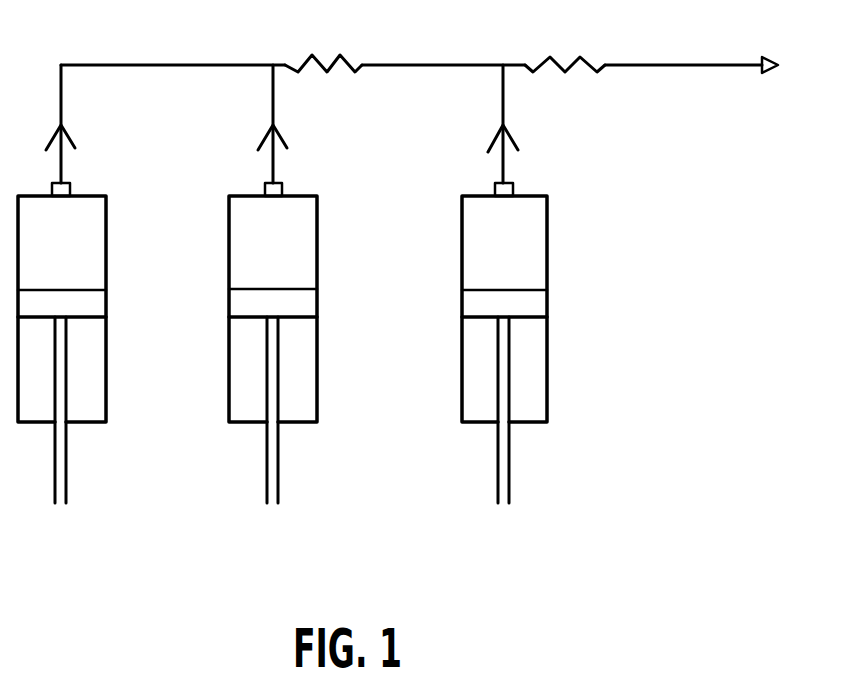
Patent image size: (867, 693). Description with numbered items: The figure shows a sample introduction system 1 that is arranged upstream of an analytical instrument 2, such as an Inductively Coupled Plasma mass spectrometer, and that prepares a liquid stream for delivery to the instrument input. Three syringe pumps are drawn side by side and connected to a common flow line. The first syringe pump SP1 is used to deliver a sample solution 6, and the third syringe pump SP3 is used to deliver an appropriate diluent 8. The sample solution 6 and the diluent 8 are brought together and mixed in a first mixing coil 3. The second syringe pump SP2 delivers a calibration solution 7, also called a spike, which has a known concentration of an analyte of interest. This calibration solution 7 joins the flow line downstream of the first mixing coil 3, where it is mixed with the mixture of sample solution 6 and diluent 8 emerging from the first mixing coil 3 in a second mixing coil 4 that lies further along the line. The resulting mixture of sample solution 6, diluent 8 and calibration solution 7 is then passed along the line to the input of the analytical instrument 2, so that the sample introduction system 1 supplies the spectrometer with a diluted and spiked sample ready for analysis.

The sample introduction system 1 is at (622, 351).
The analytical instrument 2 is at (440, 61).
The first mixing coil 3 is at (343, 55).
The second mixing coil 4 is at (582, 58).
The sample solution 6 is at (62, 103).
The calibration solution 7 is at (504, 105).
The diluent 8 is at (274, 103).
The first syringe pump SP1 is at (62, 364).
The second syringe pump SP2 is at (504, 366).
The third syringe pump SP3 is at (273, 366).